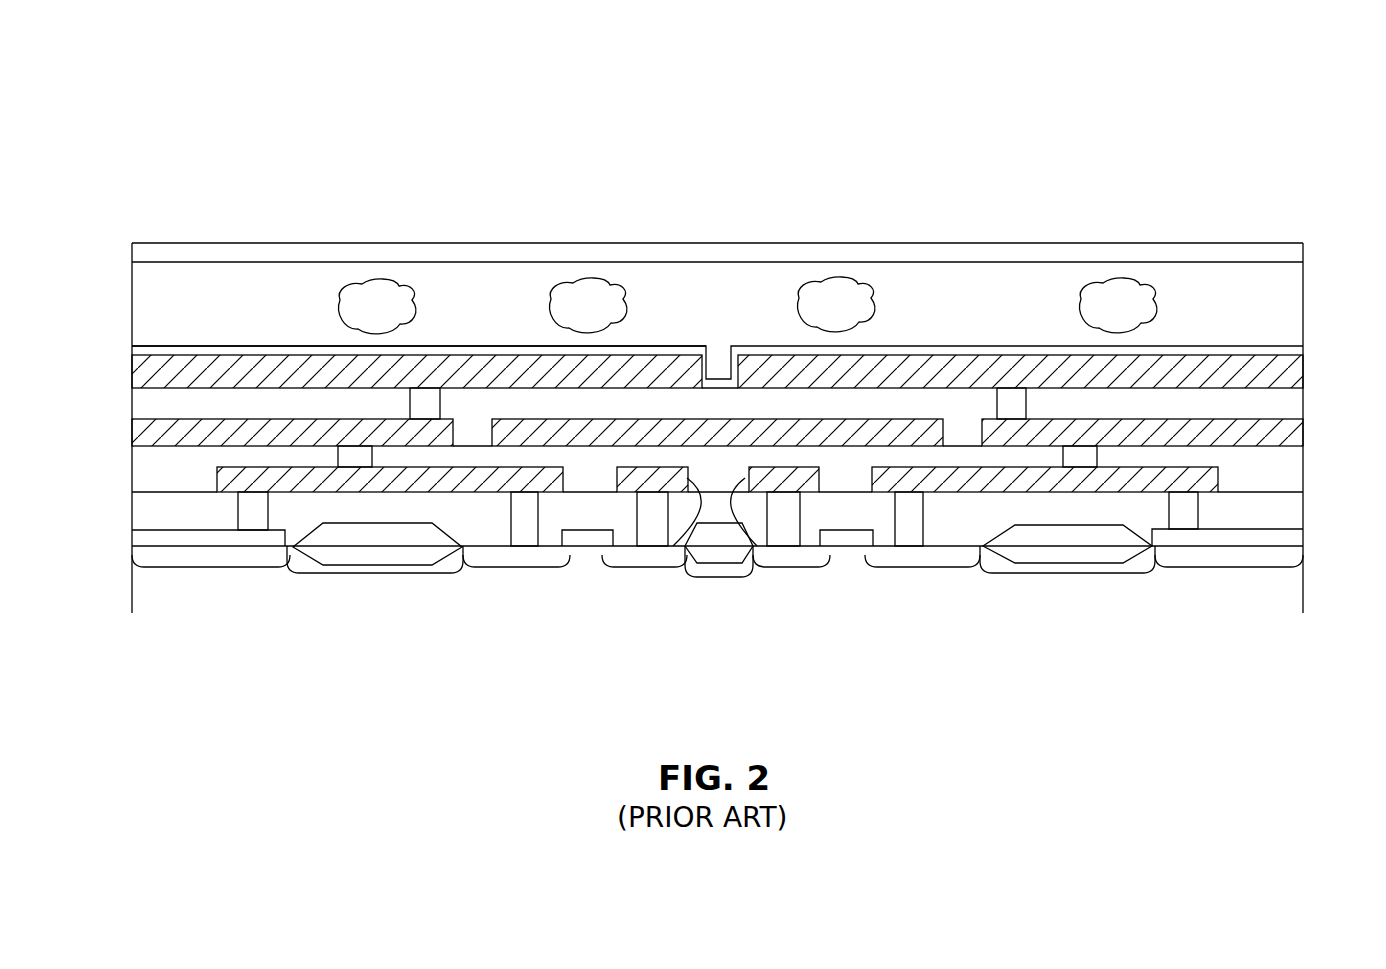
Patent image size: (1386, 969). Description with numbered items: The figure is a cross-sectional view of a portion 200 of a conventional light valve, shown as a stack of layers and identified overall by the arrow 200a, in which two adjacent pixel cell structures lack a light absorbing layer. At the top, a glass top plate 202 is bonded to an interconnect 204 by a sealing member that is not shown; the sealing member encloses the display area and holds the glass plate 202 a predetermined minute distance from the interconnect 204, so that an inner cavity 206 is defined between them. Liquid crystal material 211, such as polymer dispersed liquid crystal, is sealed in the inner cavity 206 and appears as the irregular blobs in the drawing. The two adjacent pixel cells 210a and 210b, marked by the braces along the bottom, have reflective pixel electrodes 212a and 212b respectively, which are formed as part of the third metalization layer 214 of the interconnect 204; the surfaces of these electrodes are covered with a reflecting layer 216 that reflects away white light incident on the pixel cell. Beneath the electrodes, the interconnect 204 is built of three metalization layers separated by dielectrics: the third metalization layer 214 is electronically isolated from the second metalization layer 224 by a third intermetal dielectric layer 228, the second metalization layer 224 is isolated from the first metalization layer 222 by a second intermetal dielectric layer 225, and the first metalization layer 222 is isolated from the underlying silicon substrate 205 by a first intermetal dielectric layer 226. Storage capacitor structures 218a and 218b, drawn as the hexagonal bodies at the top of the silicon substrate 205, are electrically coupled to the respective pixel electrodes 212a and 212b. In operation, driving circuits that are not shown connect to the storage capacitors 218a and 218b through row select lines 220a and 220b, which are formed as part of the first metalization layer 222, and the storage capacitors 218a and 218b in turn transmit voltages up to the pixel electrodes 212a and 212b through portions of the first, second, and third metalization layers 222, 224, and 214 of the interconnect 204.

The portion of the conventional light valve 200 is at (189, 189).
The package structure 200a is at (314, 94).
The glass top plate 202 is at (1297, 255).
The inner cavity 206 is at (1295, 290).
The liquid crystal material 211 is at (388, 293).
The reflective pixel electrode 212a is at (450, 360).
The reflective pixel electrode 212b is at (985, 365).
The reflecting layer 216 is at (1297, 350).
The third metalization layer 214 is at (754, 281).
The third intermetal dielectric layer 228 is at (1297, 409).
The second metalization layer 224 is at (1297, 430).
The second intermetal dielectric layer 225 is at (1297, 462).
The first metalization layer 222 is at (1218, 487).
The first intermetal dielectric layer 226 is at (1297, 520).
The interconnect 204 is at (120, 357).
The silicon substrate 205 is at (120, 545).
The storage capacitor structure 218a is at (546, 582).
The storage capacitor structure 218b is at (957, 582).
The row select line 220a is at (673, 546).
The row select line 220b is at (757, 546).
The pixel cell 210a is at (715, 665).
The pixel cell 210b is at (1303, 665).